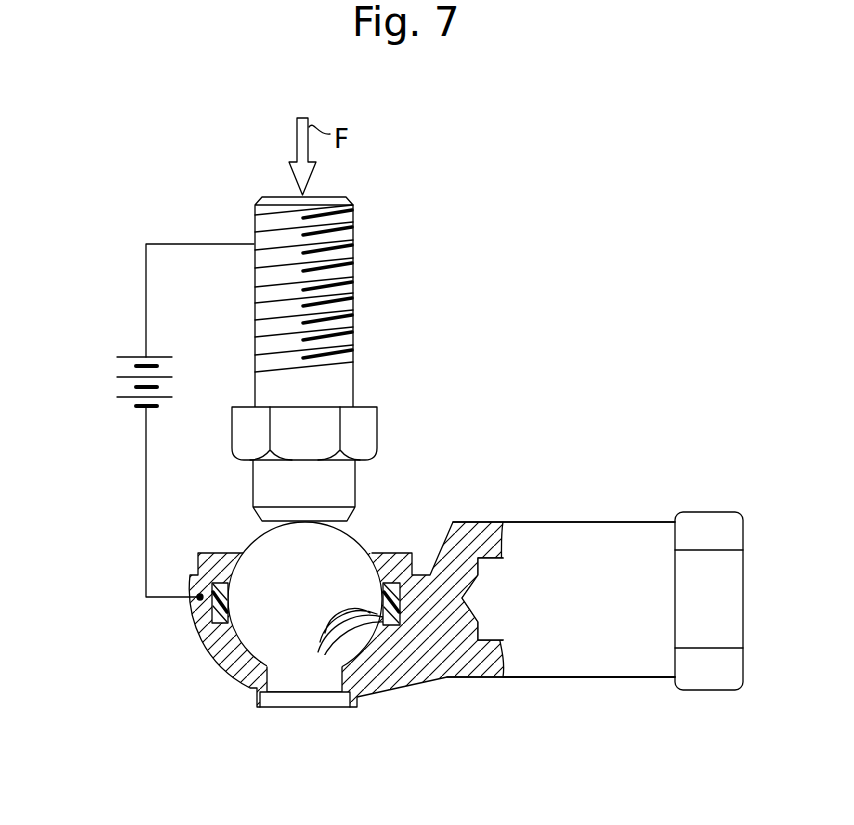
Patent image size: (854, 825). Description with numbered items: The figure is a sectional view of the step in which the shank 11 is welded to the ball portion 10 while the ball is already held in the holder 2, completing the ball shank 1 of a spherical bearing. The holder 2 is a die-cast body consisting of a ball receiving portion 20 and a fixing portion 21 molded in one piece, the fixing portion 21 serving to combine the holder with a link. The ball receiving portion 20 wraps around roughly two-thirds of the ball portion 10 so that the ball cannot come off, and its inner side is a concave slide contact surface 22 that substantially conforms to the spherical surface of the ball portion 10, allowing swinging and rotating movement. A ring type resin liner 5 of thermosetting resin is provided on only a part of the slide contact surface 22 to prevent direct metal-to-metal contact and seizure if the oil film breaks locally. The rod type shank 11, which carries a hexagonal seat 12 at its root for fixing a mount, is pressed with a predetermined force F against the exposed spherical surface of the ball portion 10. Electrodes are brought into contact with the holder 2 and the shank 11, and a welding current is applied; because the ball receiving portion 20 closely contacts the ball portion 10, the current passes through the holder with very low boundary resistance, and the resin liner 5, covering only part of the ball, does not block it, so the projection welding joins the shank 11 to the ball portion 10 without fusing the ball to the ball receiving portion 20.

The ball shank 1 is at (347, 359).
The shank 11 is at (355, 360).
The hexagonal seat 12 is at (368, 431).
The ball portion 10 is at (357, 538).
The ball receiving portion 20 is at (212, 657).
The fixing portion 21 is at (618, 530).
The holder 2 is at (578, 677).
The resin liner 5 is at (210, 610).
The slide contact surface 22 is at (248, 645).